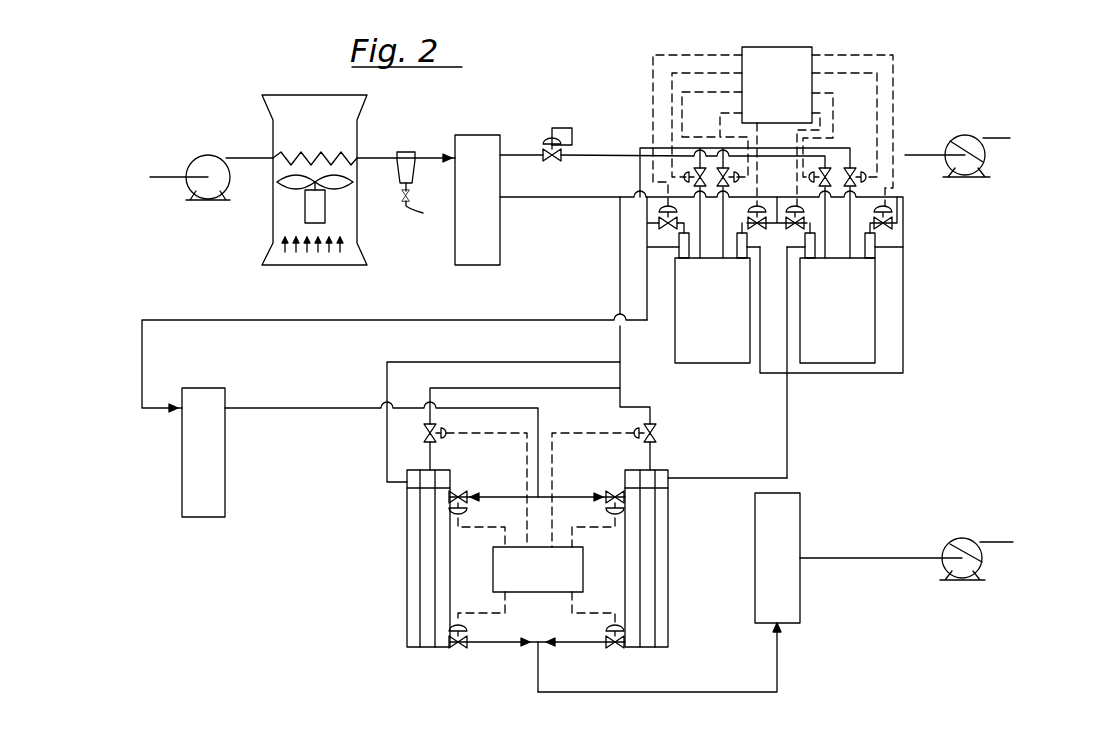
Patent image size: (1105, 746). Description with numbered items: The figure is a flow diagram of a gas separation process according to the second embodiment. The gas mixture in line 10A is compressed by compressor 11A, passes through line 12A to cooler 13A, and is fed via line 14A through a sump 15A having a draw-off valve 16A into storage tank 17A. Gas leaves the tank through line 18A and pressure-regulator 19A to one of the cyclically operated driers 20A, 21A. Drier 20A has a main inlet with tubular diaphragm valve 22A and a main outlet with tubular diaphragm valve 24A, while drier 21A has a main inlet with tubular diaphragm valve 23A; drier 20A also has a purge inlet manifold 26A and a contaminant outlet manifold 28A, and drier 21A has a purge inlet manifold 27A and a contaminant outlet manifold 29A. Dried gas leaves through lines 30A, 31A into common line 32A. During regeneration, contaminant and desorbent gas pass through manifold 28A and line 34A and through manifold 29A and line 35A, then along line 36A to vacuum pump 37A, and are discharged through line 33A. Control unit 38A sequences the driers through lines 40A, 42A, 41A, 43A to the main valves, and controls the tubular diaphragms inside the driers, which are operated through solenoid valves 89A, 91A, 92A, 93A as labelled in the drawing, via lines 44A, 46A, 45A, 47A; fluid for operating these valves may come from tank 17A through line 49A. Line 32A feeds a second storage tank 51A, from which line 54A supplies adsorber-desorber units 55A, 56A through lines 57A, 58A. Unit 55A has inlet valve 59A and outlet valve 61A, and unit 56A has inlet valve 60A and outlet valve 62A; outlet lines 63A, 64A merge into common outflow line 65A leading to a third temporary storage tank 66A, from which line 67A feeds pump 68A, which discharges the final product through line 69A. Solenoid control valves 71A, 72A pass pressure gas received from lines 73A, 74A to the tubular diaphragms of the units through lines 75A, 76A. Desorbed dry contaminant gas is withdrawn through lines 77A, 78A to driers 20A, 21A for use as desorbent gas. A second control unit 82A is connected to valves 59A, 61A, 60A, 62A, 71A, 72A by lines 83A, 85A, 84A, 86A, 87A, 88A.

The line 10A is at (169, 190).
The compressor 11A is at (208, 156).
The line 12A is at (258, 158).
The cooler 13A is at (362, 118).
The line 14A is at (372, 155).
The sump 15A is at (413, 151).
The draw-off valve 16A is at (424, 212).
The storage tank 17A is at (497, 138).
The line 18A is at (526, 157).
The pressure-regulator 19A is at (585, 110).
The drier 20A is at (730, 322).
The drier 21A is at (855, 322).
The tubular diaphragm valve 22A is at (645, 223).
The tubular diaphragm valve 23A is at (890, 200).
The tubular diaphragm valve 24A is at (648, 138).
The purge inlet manifold 26A is at (733, 260).
The purge inlet manifold 27A is at (823, 262).
The contaminant outlet manifold 28A is at (745, 262).
The contaminant outlet manifold 29A is at (790, 250).
The line 30A is at (700, 163).
The line 31A is at (856, 150).
The line 32A is at (490, 318).
The line 33A is at (985, 140).
The line 34A is at (787, 392).
The line 35A is at (870, 246).
The line 36A is at (1000, 141).
The vacuum pump 37A is at (966, 180).
The control unit 38A is at (796, 98).
The line 40A is at (672, 73).
The line 41A is at (833, 93).
The line 42A is at (682, 92).
The line 43A is at (877, 73).
The line 44A is at (653, 55).
The line 45A is at (820, 113).
The line 46A is at (720, 113).
The line 47A is at (893, 55).
The line 49A is at (640, 197).
The second storage tank 51A is at (212, 395).
The line 54A is at (300, 398).
The adsorber-desorber unit 55A is at (407, 540).
The adsorber-desorber unit 56A is at (668, 535).
The line 57A is at (505, 490).
The line 58A is at (595, 490).
The tubular diaphragm valve 59A is at (475, 499).
The tubular diaphragm valve 60A is at (606, 499).
The tubular diaphragm valve 61A is at (456, 650).
The tubular diaphragm valve 62A is at (616, 650).
The line 63A is at (530, 642).
The line 64A is at (596, 642).
The common outflow line 65A is at (745, 690).
The third temporary storage tank 66A is at (800, 515).
The line 67A is at (860, 558).
The pump 68A is at (960, 538).
The line 69A is at (1000, 542).
The solenoid control valve 71A is at (440, 428).
The solenoid control valve 72A is at (665, 433).
The line 73A is at (495, 386).
The line 74A is at (630, 402).
The line 75A is at (368, 408).
The line 76A is at (655, 455).
The line 77A is at (387, 362).
The line 78A is at (770, 478).
The control unit 82A is at (556, 581).
The line 83A is at (505, 547).
The line 84A is at (572, 547).
The line 85A is at (862, 187).
The line 86A is at (565, 612).
The line 87A is at (487, 433).
The line 88A is at (565, 433).
The valve 89A is at (745, 222).
The solenoid valve 91A is at (690, 247).
The solenoid valve 92A is at (890, 248).
The solenoid valve 93A is at (880, 226).